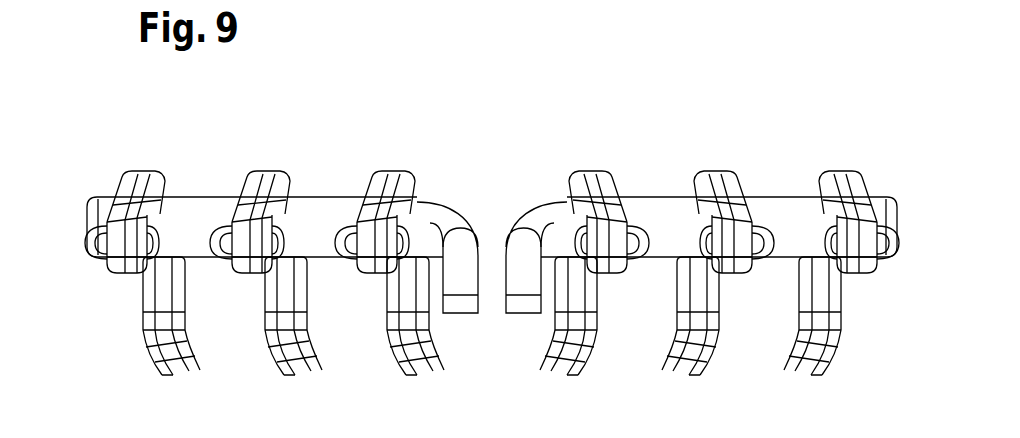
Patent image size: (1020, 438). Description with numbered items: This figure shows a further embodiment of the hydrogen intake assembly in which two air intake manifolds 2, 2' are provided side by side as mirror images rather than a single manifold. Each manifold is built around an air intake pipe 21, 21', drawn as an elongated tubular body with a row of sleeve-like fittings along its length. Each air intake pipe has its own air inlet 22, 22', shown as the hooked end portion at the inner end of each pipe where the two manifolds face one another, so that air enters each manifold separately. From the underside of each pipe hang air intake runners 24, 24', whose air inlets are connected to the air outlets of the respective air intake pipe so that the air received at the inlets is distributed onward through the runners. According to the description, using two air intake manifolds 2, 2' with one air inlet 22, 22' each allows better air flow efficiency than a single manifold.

The air intake manifold 2 is at (273, 253).
The air intake manifold 2' is at (710, 252).
The air intake pipe 21 is at (252, 201).
The air intake pipe 21' is at (731, 187).
The air inlet 22 is at (450, 297).
The air inlet 22' is at (532, 297).
The air intake runner 24 is at (135, 316).
The air intake runner 24' is at (852, 316).